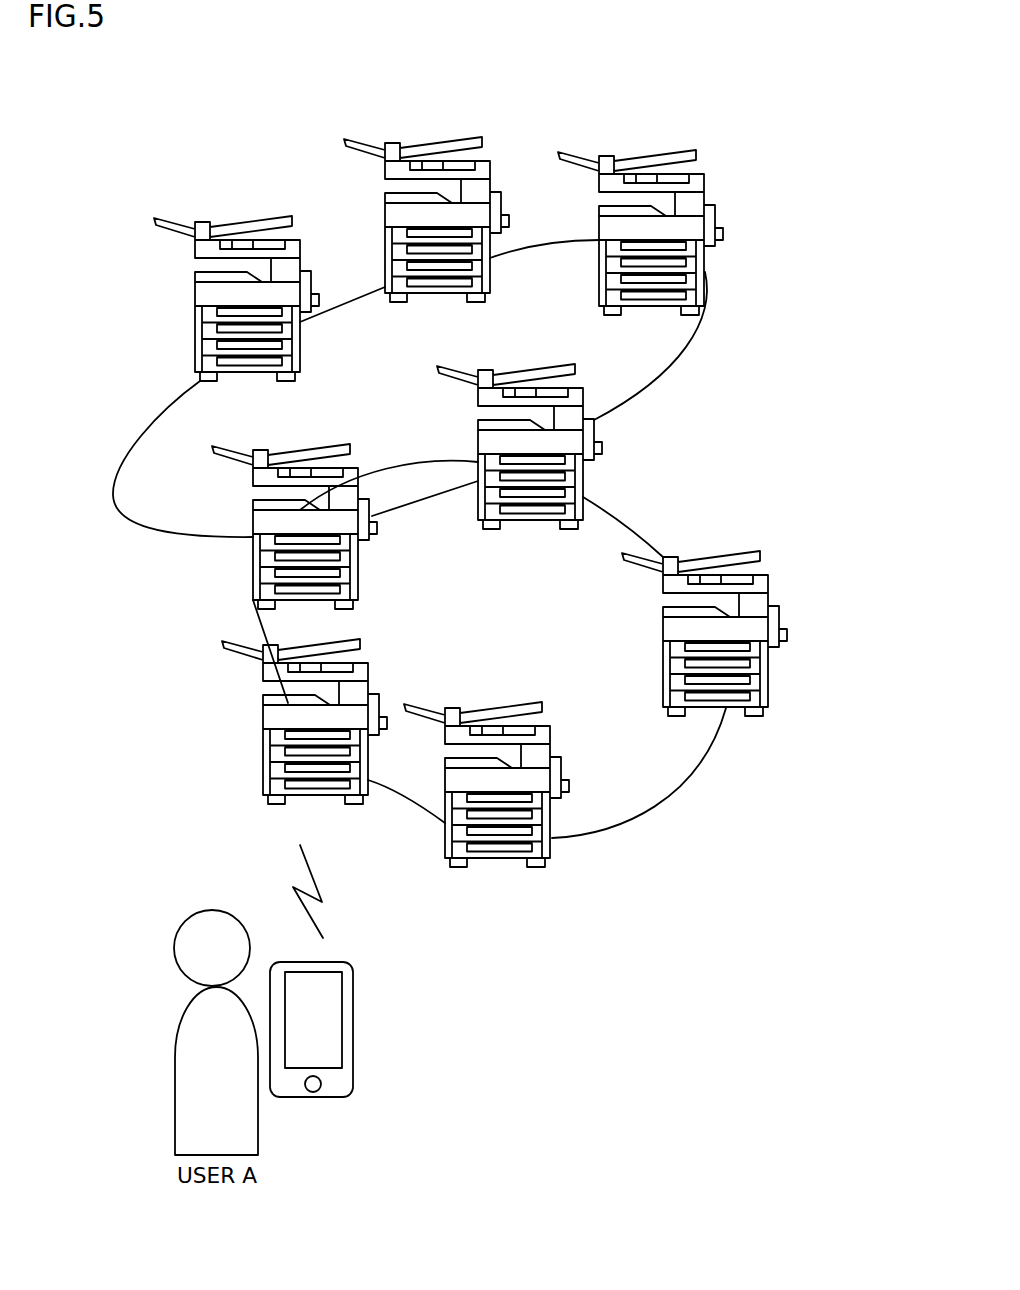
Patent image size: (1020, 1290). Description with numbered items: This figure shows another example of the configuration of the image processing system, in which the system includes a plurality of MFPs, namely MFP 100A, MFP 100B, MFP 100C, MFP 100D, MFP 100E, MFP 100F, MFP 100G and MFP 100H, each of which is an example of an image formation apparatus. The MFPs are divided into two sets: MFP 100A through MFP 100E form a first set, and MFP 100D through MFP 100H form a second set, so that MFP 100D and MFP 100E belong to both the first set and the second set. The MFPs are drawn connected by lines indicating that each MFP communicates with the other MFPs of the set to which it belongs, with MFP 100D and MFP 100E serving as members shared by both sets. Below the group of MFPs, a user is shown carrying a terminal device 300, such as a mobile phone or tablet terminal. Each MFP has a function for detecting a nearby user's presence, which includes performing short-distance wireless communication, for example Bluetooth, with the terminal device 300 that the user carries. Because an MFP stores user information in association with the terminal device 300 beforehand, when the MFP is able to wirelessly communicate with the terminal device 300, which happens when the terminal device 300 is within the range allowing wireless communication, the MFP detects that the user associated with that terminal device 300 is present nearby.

The MFP 100A is at (204, 222).
The MFP 100B is at (393, 143).
The MFP 100C is at (607, 156).
The MFP 100D is at (486, 370).
The MFP 100E is at (262, 450).
The MFP 100F is at (770, 662).
The MFP 100G is at (453, 708).
The MFP 100H is at (264, 752).
The terminal device 300 is at (332, 1098).